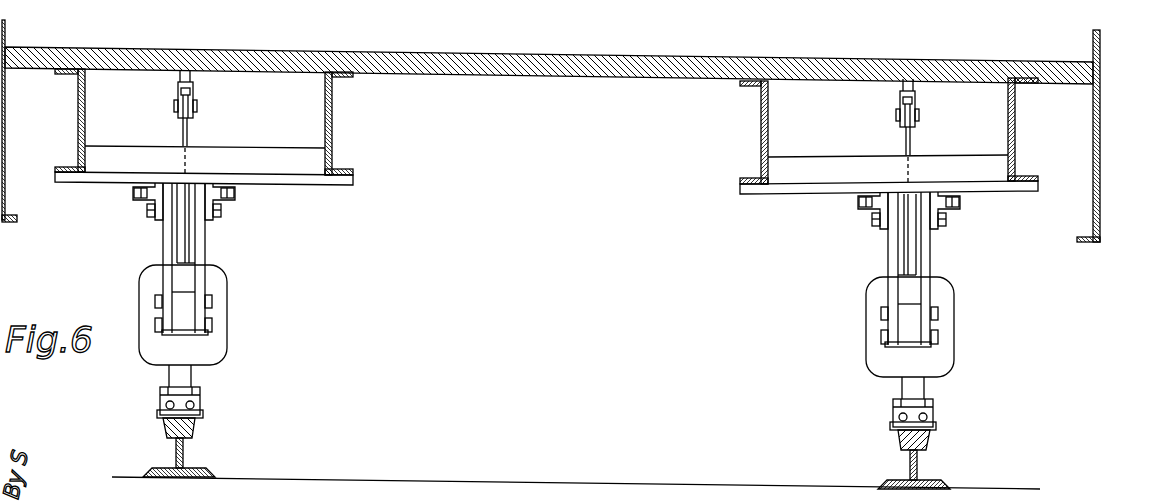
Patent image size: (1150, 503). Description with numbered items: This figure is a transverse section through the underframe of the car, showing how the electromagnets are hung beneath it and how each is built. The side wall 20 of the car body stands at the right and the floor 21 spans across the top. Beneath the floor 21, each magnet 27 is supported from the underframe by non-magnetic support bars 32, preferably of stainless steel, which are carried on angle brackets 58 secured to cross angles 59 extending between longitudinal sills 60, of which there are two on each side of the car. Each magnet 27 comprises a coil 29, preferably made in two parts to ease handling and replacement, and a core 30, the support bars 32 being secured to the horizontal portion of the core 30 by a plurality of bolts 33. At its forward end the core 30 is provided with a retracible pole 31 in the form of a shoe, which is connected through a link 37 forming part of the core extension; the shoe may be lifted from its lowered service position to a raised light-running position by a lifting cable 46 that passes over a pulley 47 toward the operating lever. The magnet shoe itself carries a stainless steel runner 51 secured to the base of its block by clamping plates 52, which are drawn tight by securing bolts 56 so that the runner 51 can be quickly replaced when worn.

The car body side wall 20 is at (1106, 96).
The car body floor 21 is at (346, 94).
The magnet 27 is at (245, 333).
The coil 29 is at (228, 288).
The core 30 is at (183, 312).
The retracible pole 31 is at (156, 393).
The support bars 32 is at (165, 227).
The bolts 33 is at (155, 322).
The link 37 is at (192, 375).
The lifting cable 46 is at (188, 132).
The pulley 47 is at (194, 97).
The runner 51 is at (157, 417).
The clamping plates 52 is at (196, 402).
The securing bolts 56 is at (191, 410).
The angle brackets 58 is at (133, 186).
The cross angles 59 is at (283, 167).
The longitudinal sills 60 is at (86, 108).